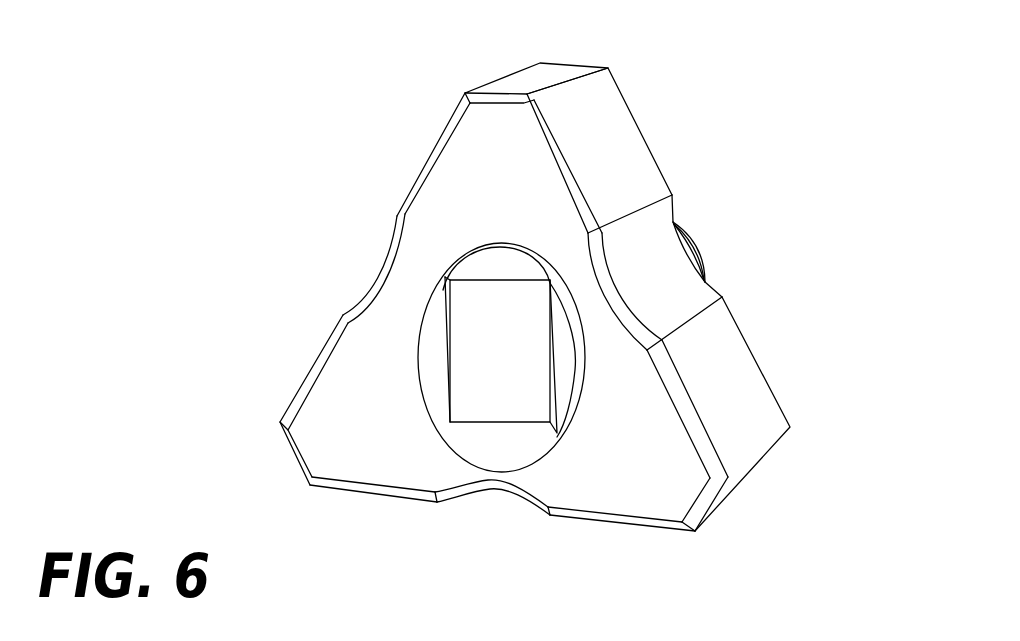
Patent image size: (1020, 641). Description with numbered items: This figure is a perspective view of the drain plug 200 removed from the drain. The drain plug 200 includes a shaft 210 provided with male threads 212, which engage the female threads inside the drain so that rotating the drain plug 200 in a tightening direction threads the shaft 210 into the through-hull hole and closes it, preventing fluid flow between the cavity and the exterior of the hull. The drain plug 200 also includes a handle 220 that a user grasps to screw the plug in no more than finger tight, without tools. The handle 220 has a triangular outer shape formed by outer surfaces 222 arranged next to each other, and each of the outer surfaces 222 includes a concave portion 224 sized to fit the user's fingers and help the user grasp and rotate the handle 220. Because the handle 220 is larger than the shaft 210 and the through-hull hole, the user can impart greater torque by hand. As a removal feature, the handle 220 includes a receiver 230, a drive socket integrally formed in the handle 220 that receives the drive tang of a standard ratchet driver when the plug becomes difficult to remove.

The drain plug 200 is at (713, 52).
The shaft 210 is at (692, 233).
The male threads 212 is at (697, 247).
The handle 220 is at (747, 428).
The outer surfaces 222 is at (414, 142).
The concave portion 224 is at (352, 254).
The receiver 230 is at (503, 396).